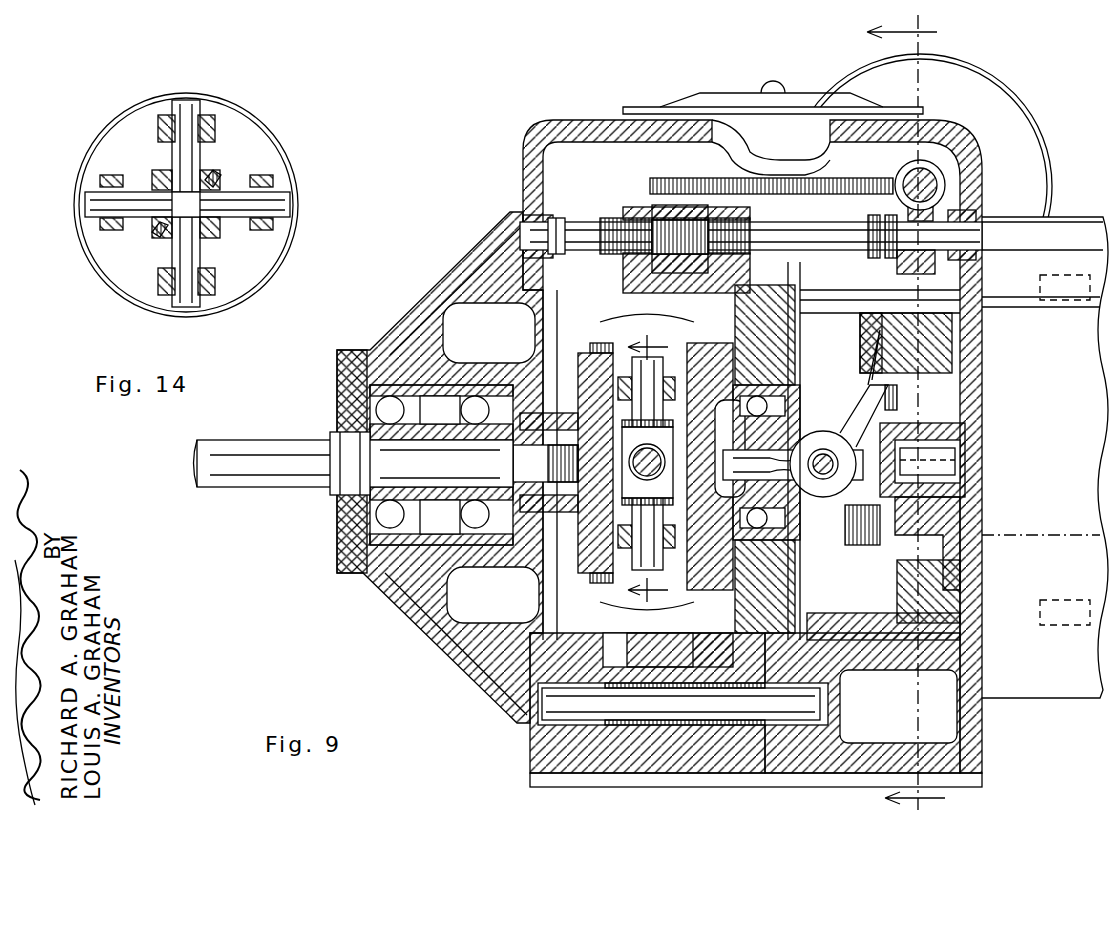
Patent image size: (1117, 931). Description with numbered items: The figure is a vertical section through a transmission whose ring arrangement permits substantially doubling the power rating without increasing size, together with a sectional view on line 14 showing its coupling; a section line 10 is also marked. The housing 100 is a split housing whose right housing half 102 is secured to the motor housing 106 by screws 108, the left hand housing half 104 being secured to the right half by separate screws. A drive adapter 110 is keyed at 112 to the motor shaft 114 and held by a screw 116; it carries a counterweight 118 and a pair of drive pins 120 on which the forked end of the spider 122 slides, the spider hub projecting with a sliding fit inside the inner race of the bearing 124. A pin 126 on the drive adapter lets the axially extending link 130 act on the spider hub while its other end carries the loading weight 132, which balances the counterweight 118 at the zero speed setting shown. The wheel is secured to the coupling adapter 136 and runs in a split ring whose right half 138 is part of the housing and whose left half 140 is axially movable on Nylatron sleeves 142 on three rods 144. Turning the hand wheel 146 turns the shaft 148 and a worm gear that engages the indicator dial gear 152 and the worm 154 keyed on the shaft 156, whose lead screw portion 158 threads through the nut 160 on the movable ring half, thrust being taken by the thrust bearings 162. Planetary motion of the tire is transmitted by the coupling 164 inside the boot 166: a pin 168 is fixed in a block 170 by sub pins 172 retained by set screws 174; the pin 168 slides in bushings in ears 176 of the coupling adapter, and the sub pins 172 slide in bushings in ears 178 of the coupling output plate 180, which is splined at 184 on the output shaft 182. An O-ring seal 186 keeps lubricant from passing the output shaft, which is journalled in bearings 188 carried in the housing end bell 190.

In FIG. 9, the section line 10 is at (901, 416).
In FIG. 9, the section line 14 is at (649, 461).
In FIG. 9, the housing 100 is at (510, 743).
In FIG. 9, the housing half 102 is at (850, 765).
In FIG. 9, the housing half 104 is at (615, 765).
In FIG. 9, the motor housing 106 is at (1070, 460).
In FIG. 9, the screws 108 is at (1045, 282).
In FIG. 9, the drive adapter 110 is at (955, 425).
In FIG. 9, the key 112 is at (930, 482).
In FIG. 9, the motor shaft 114 is at (950, 458).
In FIG. 9, the screw 116 is at (890, 448).
In FIG. 9, the counterweight 118 is at (945, 570).
In FIG. 9, the drive pins 120 is at (920, 570).
In FIG. 9, the spider 122 is at (897, 390).
In FIG. 9, the bearing 124 is at (825, 520).
In FIG. 9, the pin 126 is at (852, 470).
In FIG. 9, the link 130 is at (862, 400).
In FIG. 9, the loading weight 132 is at (935, 345).
In FIG. 9, the coupling adapter 136 is at (700, 345).
In FIG. 9, the right half of split-ring 138 is at (790, 645).
In FIG. 9, the left half of split-ring 140 is at (700, 632).
In FIG. 9, the Nylatron sleeves 142 is at (748, 725).
In FIG. 9, the rods 144 is at (560, 700).
In FIG. 9, the hand wheel 146 is at (975, 92).
In FIG. 9, the shaft 148 is at (945, 190).
In FIG. 9, the indicator dial gear 152 is at (850, 178).
In FIG. 9, the worm 154 is at (900, 262).
In FIG. 9, the shaft 156 is at (875, 262).
In FIG. 9, the lead screw portion 158 is at (605, 222).
In FIG. 9, the nut 160 is at (680, 205).
In FIG. 9, the thrust bearings 162 is at (560, 220).
In FIG. 9, the coupling 164 is at (581, 652).
In FIG. 9, the boot 166 is at (630, 598).
In FIG. 14, the pin 168 is at (185, 105).
In FIG. 9, the pin 168 is at (641, 370).
In FIG. 14, the block 170 is at (215, 240).
In FIG. 9, the block 170 is at (625, 490).
In FIG. 14, the sub pins 172 is at (85, 204).
In FIG. 9, the sub pins 172 is at (793, 451).
In FIG. 14, the set screws 174 is at (215, 178).
In FIG. 14, the ears 176 is at (215, 118).
In FIG. 9, the ears 176 is at (585, 370).
In FIG. 14, the ears 178 is at (105, 178).
In FIG. 9, the ears 178 is at (665, 448).
In FIG. 14, the coupling output plate 180 is at (270, 262).
In FIG. 9, the output shaft 182 is at (222, 468).
In FIG. 9, the spline 184 is at (575, 430).
In FIG. 9, the O-ring seal 186 is at (528, 510).
In FIG. 9, the bearings 188 is at (470, 425).
In FIG. 9, the housing end bell 190 is at (395, 605).